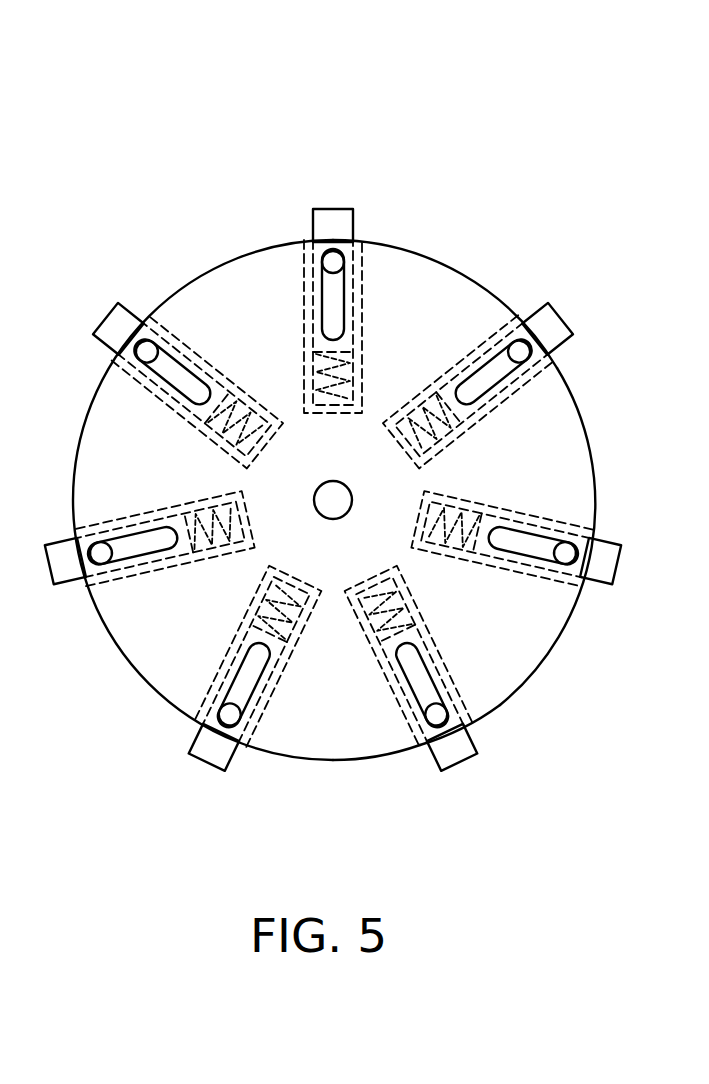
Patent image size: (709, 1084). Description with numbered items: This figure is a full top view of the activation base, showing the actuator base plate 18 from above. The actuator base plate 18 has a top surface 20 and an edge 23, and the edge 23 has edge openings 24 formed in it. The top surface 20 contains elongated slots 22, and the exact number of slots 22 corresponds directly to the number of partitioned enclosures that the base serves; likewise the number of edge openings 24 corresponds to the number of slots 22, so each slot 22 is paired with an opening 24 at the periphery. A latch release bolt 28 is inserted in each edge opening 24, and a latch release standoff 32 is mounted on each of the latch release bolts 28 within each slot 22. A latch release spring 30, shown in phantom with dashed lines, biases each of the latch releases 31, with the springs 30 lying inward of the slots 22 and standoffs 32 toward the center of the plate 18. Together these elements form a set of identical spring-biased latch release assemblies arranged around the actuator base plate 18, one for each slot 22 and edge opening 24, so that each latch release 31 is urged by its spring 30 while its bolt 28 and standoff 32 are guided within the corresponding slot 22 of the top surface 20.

The actuator base plate 18 is at (566, 113).
The top surface 20 is at (383, 737).
The elongated slot 22 is at (183, 363).
The edge 23 is at (275, 758).
The edge opening 24 is at (465, 721).
The latch release bolt 28 is at (562, 315).
The latch release spring 30 is at (362, 392).
The latch release 31 is at (292, 199).
The latch release standoff 32 is at (102, 563).